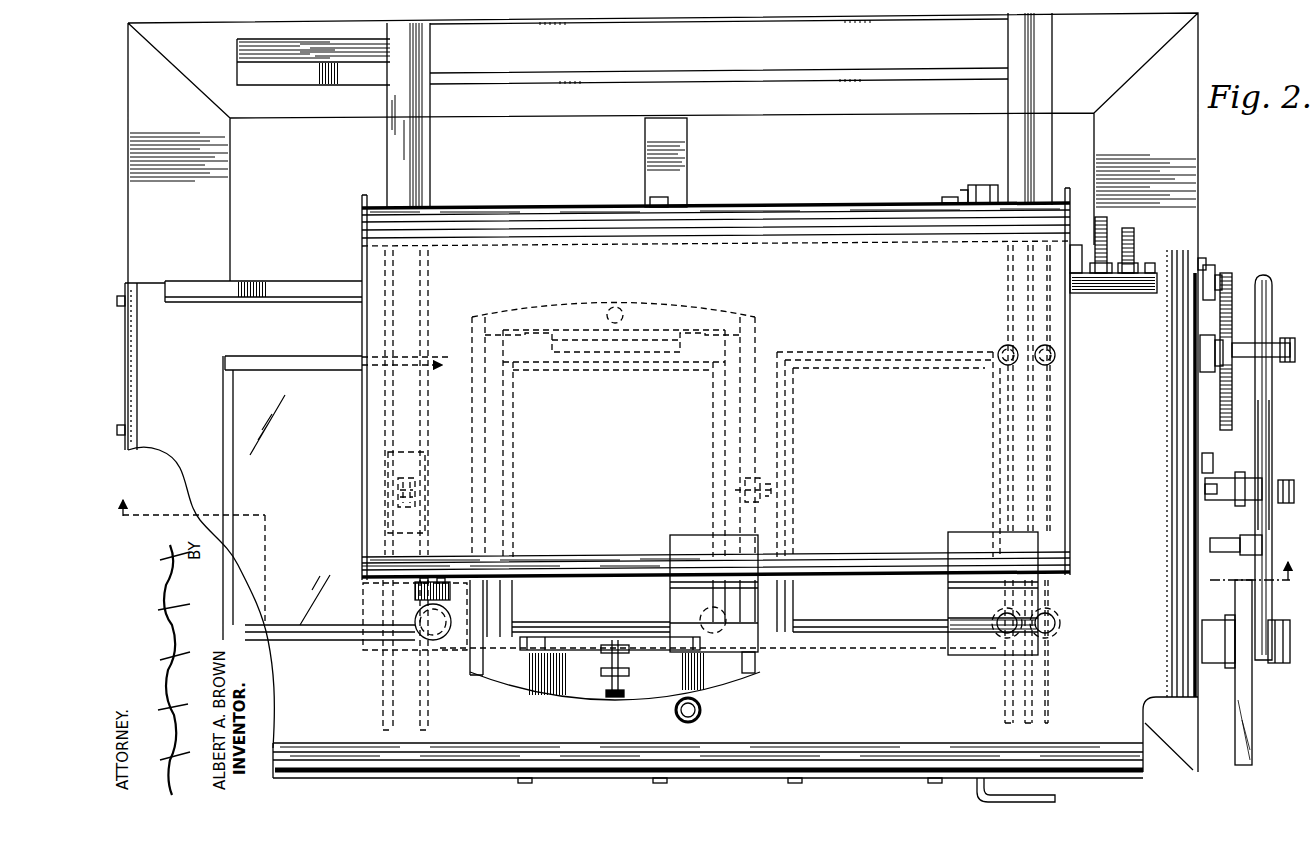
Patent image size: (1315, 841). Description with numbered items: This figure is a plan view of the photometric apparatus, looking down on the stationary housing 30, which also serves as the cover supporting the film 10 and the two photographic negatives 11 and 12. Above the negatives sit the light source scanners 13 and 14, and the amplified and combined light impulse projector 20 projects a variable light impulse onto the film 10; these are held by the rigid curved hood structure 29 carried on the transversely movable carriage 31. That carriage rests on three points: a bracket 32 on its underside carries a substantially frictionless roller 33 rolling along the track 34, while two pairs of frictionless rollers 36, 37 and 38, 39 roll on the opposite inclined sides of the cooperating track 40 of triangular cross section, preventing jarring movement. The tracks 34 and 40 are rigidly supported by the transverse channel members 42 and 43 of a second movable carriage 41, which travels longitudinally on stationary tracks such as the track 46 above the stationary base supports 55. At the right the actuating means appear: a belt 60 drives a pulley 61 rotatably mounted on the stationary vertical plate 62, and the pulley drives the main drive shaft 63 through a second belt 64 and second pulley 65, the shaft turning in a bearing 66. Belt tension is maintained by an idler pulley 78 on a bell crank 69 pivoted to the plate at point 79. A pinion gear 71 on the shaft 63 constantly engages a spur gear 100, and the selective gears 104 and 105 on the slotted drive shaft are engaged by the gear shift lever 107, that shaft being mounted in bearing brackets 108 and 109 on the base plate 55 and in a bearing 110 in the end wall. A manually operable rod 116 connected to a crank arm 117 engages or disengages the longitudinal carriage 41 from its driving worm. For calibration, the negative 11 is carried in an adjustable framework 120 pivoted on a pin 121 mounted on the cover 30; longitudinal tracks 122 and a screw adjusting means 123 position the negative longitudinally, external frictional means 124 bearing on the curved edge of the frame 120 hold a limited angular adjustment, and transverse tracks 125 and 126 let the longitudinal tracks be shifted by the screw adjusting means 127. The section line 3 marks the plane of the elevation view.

The section line 3- 3 is at (705, 540).
The film 10 is at (346, 622).
The photographic negative 11 is at (660, 615).
The photographic negative 12 is at (856, 612).
The light source scanner 13 is at (670, 600).
The light source scanner 14 is at (958, 603).
The amplified and combined light impulse projector 20 is at (433, 641).
The rigid curved hood structure 29 is at (888, 306).
The stationary housing 30 is at (615, 780).
The movable carriage 31 is at (360, 327).
The bracket 32 is at (396, 505).
The roller 33 is at (395, 475).
The track 34 is at (416, 170).
The roller 36 is at (1000, 640).
The roller 37 is at (1055, 632).
The roller 38 is at (998, 350).
The roller 39 is at (1055, 345).
The track 40 is at (1052, 74).
The movable carriage 41 is at (772, 72).
The transverse channel member 42 is at (386, 160).
The transverse channel member 43 is at (1008, 145).
The stationary track 46 is at (342, 58).
The stationary base support 55 is at (232, 225).
The belt 60 is at (1248, 735).
The pulley 61 is at (1232, 672).
The stationary vertical plate 62 is at (1178, 458).
The main power shaft 63 is at (1260, 352).
The second belt 64 is at (1262, 665).
The second pulley 65 is at (1262, 430).
The bearing 66 is at (1200, 352).
The bell crank 69 is at (1230, 490).
The pinion gear 71 is at (1220, 365).
The idler pulley 78 is at (1272, 482).
The pivot point 79 is at (1250, 545).
The spur gear 100 is at (1218, 407).
The selective gear 104 is at (1134, 238).
The selective gear 105 is at (1105, 222).
The gear shift lever 107 is at (1242, 280).
The bearing bracket 108 is at (650, 198).
The bearing bracket 109 is at (950, 196).
The bearing 110 is at (1208, 265).
The manually operable rod 116 is at (977, 790).
The crank arm 117 is at (980, 184).
The adjustable framework 120 is at (572, 700).
The pin 121 is at (610, 305).
The longitudinal tracks 122 is at (625, 342).
The screw adjusting means 123 is at (775, 490).
The external frictional means 124 is at (700, 712).
The transverse track 125 is at (478, 676).
The transverse track 126 is at (756, 672).
The screw adjusting means 127 is at (620, 700).